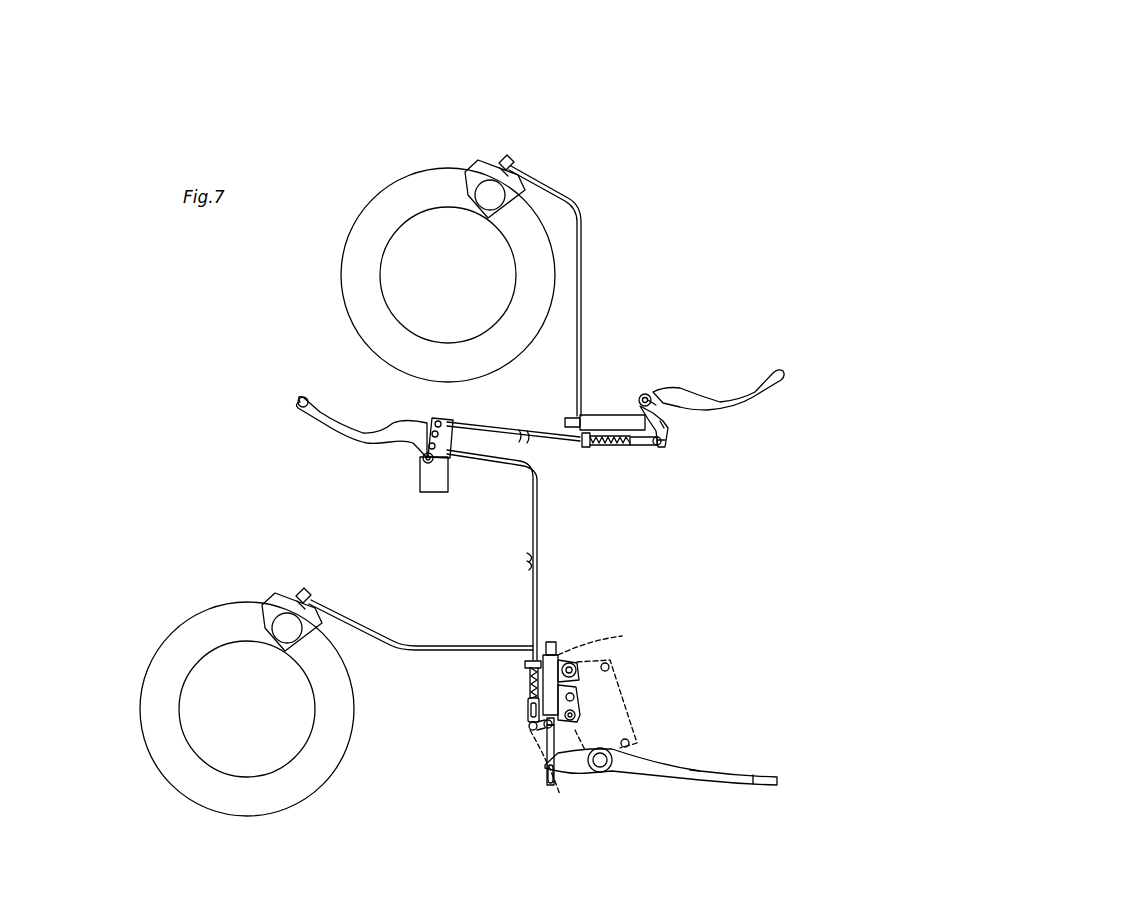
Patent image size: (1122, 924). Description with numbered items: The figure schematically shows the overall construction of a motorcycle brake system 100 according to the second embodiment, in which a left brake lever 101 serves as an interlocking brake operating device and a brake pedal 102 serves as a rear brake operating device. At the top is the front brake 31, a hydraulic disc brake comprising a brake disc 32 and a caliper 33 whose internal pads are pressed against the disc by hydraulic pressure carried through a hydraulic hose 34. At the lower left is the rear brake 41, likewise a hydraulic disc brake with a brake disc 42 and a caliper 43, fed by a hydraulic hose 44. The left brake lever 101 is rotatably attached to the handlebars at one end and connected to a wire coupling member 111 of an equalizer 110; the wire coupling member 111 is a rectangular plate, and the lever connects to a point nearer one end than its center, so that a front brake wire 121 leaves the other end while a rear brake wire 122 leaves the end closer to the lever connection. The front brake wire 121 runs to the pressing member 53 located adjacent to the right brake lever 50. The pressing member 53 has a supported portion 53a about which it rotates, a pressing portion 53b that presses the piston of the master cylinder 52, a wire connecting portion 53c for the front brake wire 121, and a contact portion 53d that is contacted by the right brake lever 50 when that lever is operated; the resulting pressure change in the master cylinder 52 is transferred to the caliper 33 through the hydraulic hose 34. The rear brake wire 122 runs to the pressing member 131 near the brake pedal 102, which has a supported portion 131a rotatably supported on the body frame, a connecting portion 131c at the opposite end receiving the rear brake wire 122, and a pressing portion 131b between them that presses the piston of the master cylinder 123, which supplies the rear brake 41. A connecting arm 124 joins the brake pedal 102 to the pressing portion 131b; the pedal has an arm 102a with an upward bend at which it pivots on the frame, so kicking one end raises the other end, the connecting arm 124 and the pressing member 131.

The brake system 100 is at (651, 106).
The front brake 31 is at (528, 153).
The brake disc 32 is at (397, 190).
The caliper 33 is at (480, 158).
The hydraulic hose 34 is at (583, 268).
The rear brake 41 is at (328, 582).
The brake disc 42 is at (185, 630).
The caliper 43 is at (263, 602).
The hydraulic hose 44 is at (442, 648).
The right brake lever 50 is at (735, 397).
The master cylinder 52 is at (600, 415).
The pressing member 53 is at (672, 425).
The supported portion 53a is at (647, 394).
The pressing portion 53b is at (666, 432).
The wire connecting portion 53c is at (661, 450).
The contact portion 53d is at (680, 410).
The left brake lever 101 is at (318, 422).
The brake pedal 102 is at (749, 770).
The arm 102a is at (688, 765).
The equalizer 110 is at (463, 468).
The wire coupling member 111 is at (433, 415).
The front brake wire 121 is at (545, 440).
The rear brake wire 122 is at (540, 512).
The master cylinder 123 is at (556, 664).
The connecting arm 124 is at (556, 748).
The pressing member 131 is at (525, 733).
The supported portion 131a is at (582, 715).
The pressing portion 131b is at (545, 765).
The connecting portion 131c is at (529, 720).